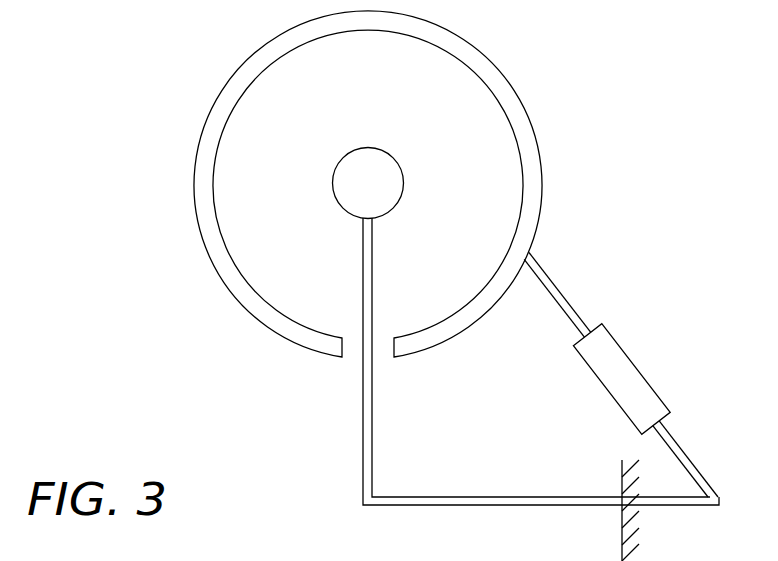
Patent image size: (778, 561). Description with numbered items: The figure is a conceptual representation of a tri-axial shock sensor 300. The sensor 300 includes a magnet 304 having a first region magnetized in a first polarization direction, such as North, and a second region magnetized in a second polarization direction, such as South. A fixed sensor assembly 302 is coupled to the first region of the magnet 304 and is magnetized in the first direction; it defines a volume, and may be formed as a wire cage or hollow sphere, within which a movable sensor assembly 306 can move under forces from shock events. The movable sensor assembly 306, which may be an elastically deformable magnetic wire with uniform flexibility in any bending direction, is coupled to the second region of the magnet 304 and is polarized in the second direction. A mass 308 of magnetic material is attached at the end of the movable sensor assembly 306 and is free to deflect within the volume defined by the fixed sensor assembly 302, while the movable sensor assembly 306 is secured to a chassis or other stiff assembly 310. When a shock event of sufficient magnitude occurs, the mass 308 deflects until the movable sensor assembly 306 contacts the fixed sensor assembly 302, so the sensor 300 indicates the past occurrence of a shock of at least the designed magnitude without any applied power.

The tri-axial shock sensor 300 is at (153, 83).
The fixed sensor assembly 302 is at (511, 103).
The magnet 304 is at (640, 381).
The movable sensor assembly 306 is at (416, 497).
The mass 308 is at (396, 162).
The chassis 310 is at (622, 538).